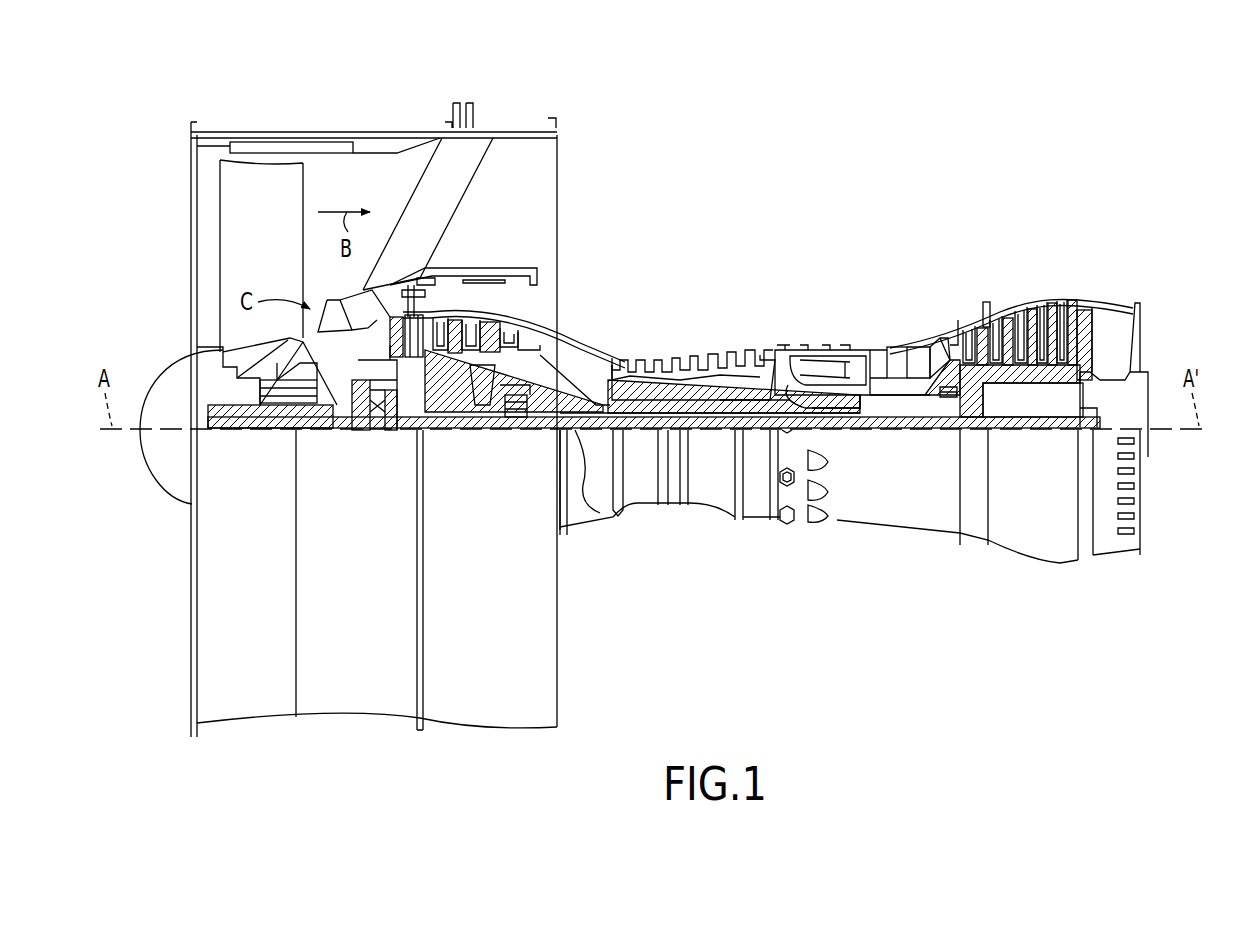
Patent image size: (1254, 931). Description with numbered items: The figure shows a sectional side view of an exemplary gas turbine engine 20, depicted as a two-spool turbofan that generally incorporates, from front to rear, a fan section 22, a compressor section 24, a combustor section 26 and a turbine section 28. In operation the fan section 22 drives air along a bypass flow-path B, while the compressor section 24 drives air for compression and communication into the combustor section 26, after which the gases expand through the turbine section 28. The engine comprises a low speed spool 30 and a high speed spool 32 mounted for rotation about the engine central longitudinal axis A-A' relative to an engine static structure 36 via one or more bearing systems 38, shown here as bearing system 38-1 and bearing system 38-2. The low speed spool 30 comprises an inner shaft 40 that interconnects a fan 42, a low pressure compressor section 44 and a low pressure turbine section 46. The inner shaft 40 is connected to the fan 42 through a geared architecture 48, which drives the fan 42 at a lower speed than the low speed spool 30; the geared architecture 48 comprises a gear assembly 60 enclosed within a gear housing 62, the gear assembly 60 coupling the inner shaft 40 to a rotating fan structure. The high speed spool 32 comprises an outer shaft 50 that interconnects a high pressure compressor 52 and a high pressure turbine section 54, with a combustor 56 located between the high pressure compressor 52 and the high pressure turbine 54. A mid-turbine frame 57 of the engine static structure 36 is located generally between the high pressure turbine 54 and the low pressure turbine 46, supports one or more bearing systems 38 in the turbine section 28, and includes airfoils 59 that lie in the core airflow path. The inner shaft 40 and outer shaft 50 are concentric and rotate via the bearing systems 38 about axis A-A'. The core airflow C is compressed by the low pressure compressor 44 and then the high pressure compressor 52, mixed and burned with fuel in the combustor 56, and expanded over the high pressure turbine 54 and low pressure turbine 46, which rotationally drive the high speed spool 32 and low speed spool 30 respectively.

The gas turbine engine 20 is at (883, 168).
The fan section 22 is at (415, 110).
The compressor section 24 is at (425, 236).
The combustor section 26 is at (878, 236).
The turbine section 28 is at (1082, 236).
The low speed spool 30 is at (720, 452).
The high speed spool 32 is at (753, 400).
The engine static structure 36 is at (183, 725).
The bearing system 38 is at (943, 420).
The bearing system 38-1 is at (274, 408).
The bearing system 38-2 is at (513, 418).
The inner shaft 40 is at (583, 455).
The fan 42 is at (268, 257).
The low pressure compressor section 44 is at (490, 335).
The low pressure turbine section 46 is at (1020, 318).
The geared architecture 48 is at (386, 445).
The outer shaft 50 is at (823, 415).
The high pressure compressor 52 is at (712, 362).
The high pressure turbine section 54 is at (896, 345).
The combustor 56 is at (825, 372).
The mid-turbine frame 57 is at (940, 340).
The airfoils 59 is at (950, 345).
The gear assembly 60 is at (393, 413).
The gear housing 62 is at (387, 376).